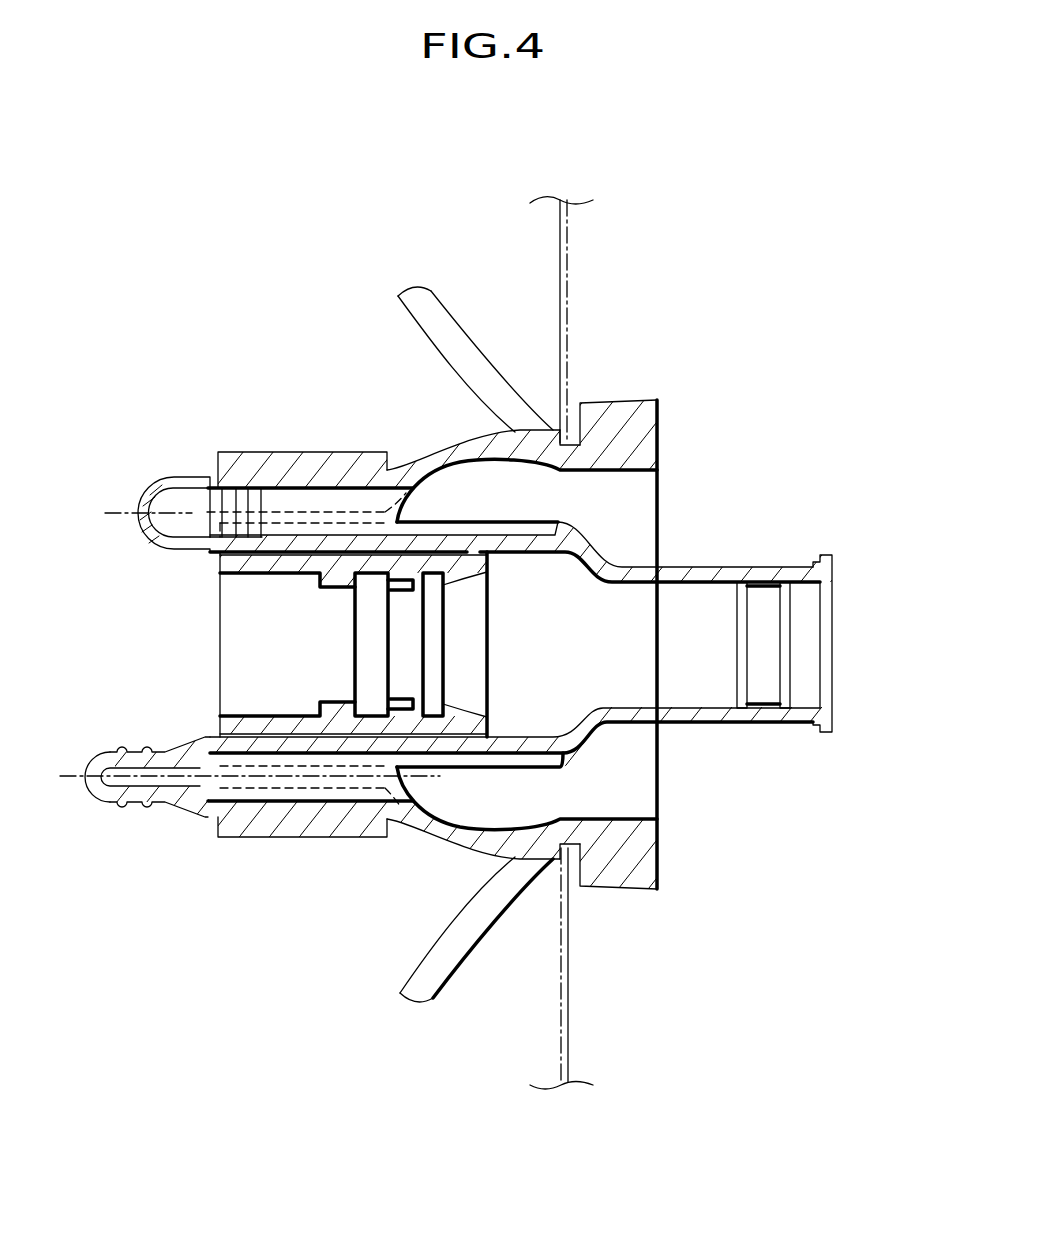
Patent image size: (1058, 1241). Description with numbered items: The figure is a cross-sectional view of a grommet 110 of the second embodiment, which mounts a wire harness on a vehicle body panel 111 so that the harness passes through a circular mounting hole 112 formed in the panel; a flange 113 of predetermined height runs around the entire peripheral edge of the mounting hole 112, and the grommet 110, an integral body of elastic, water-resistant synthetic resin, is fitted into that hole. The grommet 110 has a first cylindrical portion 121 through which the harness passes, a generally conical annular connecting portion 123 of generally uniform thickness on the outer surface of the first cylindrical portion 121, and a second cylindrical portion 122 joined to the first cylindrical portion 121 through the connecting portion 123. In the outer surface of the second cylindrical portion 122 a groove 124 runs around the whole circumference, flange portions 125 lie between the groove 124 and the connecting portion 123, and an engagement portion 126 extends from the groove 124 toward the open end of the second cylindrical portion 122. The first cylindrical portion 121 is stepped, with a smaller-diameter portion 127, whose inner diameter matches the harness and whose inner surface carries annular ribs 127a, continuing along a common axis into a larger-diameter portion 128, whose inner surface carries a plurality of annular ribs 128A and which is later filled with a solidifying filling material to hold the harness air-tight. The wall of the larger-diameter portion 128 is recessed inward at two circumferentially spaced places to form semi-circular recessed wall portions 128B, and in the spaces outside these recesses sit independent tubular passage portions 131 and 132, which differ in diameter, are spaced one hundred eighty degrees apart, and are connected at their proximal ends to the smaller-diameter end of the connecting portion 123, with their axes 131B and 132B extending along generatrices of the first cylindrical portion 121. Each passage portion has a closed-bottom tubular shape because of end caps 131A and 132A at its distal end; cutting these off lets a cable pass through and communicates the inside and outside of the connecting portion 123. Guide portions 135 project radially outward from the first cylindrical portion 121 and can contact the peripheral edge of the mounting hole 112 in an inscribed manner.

The grommet 110 is at (722, 340).
The vehicle body panel 111 is at (566, 282).
The mounting hole 112 is at (587, 477).
The flange 113 is at (575, 428).
The first cylindrical portion 121 is at (754, 723).
The second cylindrical portion 122 is at (513, 848).
The connecting portion 123 is at (415, 828).
The groove 124 is at (578, 895).
The flange portions 125 is at (430, 290).
The engagement portion 126 is at (657, 418).
The smaller-diameter portion 127 is at (785, 566).
The annular ribs 127a is at (742, 598).
The larger-diameter portion 128 is at (538, 768).
The annular ribs 128A is at (393, 612).
The recessed wall portions 128B is at (220, 733).
The tubular passage portion 131 is at (223, 557).
The end cap 131A is at (148, 484).
The axis 131B is at (355, 512).
The tubular passage portion 132 is at (207, 820).
The end cap 132A is at (88, 780).
The axis 132B is at (205, 820).
The guide portions 135 is at (268, 452).